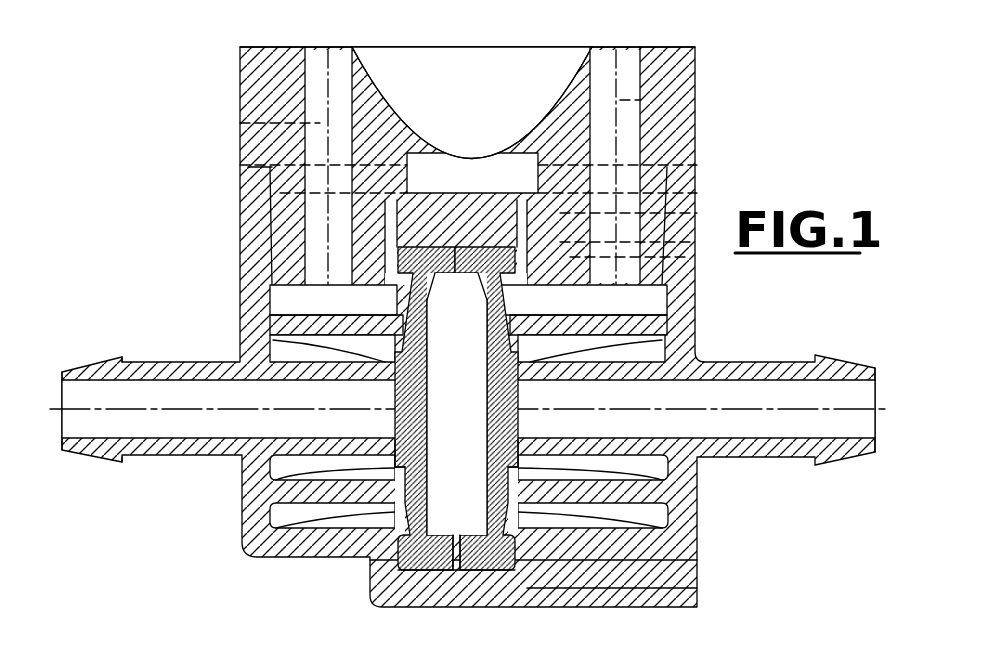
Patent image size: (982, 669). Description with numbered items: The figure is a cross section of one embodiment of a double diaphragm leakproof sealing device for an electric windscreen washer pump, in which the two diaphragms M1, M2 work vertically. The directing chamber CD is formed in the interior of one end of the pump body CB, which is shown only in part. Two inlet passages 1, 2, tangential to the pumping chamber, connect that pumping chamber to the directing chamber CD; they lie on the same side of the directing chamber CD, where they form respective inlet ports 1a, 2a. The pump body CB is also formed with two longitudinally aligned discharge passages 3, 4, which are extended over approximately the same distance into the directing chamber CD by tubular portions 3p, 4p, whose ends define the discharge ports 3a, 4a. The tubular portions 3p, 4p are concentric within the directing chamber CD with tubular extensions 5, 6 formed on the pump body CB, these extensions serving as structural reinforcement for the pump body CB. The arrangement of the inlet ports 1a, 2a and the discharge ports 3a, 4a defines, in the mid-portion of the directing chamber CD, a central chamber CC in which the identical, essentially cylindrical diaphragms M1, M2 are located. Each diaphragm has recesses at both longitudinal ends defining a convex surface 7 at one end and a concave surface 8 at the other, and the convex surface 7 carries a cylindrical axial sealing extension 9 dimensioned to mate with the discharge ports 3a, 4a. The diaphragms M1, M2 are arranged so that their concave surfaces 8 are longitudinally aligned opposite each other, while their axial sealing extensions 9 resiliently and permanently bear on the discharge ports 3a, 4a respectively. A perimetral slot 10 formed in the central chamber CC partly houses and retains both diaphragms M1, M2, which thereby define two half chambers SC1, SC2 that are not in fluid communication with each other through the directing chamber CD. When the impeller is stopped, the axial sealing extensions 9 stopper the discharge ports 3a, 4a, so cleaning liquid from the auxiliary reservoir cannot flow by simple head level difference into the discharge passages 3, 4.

The inlet passage 1 is at (240, 130).
The inlet port 1a is at (272, 245).
The inlet passage 2 is at (693, 86).
The inlet port 2a is at (666, 216).
The discharge passage 3 is at (512, 60).
The discharge port 3a is at (665, 345).
The tubular portion 3p is at (630, 470).
The discharge passage 4 is at (150, 362).
The discharge port 4a is at (275, 340).
The tubular portion 4p is at (242, 483).
The tubular extension 5 is at (700, 298).
The tubular extension 6 is at (272, 320).
The convex surface 7 is at (378, 575).
The concave surface 8 is at (400, 252).
The axial sealing extension 9 is at (242, 520).
The perimetral slot 10 is at (468, 570).
The pump body CB is at (762, 139).
The central chamber CC is at (448, 520).
The directing chamber CD is at (668, 500).
The diaphragm M1 is at (497, 560).
The diaphragm M2 is at (370, 525).
The half chamber SC1 is at (620, 518).
The half chamber SC2 is at (300, 518).